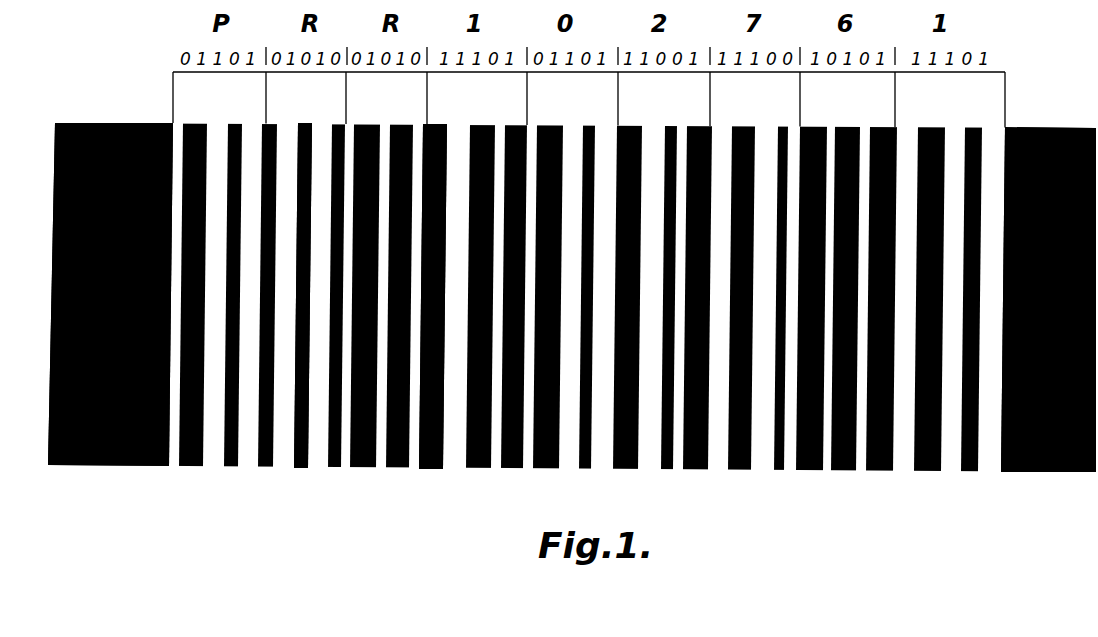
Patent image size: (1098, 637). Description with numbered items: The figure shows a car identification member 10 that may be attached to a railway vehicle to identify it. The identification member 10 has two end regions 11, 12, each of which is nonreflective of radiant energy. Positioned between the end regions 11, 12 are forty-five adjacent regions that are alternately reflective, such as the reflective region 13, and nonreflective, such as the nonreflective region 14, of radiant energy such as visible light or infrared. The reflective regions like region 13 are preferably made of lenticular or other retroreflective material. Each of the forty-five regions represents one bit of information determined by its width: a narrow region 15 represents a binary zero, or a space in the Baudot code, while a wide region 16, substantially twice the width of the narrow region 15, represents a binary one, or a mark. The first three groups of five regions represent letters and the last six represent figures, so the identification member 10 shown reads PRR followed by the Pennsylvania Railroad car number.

The car identification member 10 is at (802, 512).
The end region 11 is at (95, 465).
The end region 12 is at (1076, 471).
The reflective region 13 is at (244, 467).
The nonreflective region 14 is at (297, 467).
The narrow region 15 is at (380, 467).
The wide region 16 is at (451, 467).